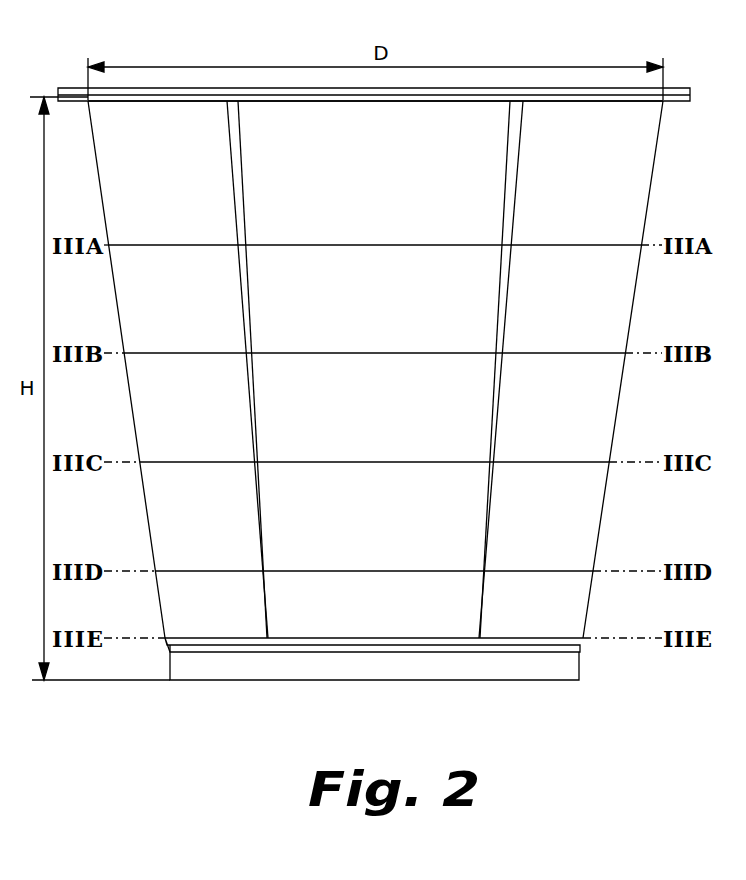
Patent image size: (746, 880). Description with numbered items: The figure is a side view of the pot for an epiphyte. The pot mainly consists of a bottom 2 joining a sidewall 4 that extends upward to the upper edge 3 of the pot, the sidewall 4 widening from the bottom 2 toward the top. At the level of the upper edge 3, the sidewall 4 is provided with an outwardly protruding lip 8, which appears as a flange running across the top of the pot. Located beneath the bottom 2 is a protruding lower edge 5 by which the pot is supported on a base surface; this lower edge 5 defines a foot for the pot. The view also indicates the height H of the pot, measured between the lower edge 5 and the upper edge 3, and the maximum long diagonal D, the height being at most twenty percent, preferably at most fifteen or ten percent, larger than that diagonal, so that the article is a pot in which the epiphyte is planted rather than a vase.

The lip 8 is at (675, 90).
The upper edge 3 is at (665, 103).
The sidewall 4 is at (560, 307).
The bottom 2 is at (325, 650).
The lower edge 5 is at (250, 680).